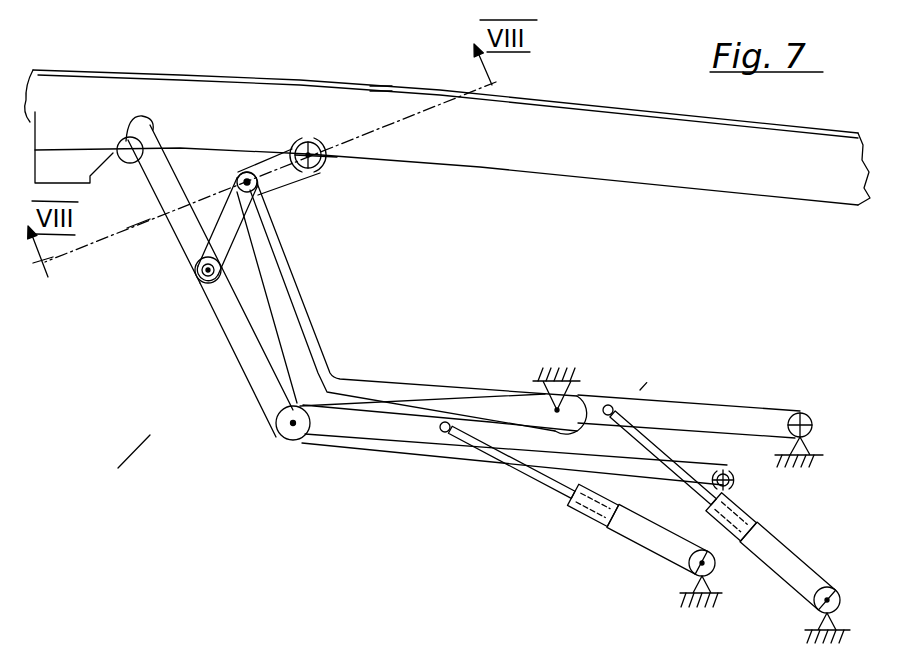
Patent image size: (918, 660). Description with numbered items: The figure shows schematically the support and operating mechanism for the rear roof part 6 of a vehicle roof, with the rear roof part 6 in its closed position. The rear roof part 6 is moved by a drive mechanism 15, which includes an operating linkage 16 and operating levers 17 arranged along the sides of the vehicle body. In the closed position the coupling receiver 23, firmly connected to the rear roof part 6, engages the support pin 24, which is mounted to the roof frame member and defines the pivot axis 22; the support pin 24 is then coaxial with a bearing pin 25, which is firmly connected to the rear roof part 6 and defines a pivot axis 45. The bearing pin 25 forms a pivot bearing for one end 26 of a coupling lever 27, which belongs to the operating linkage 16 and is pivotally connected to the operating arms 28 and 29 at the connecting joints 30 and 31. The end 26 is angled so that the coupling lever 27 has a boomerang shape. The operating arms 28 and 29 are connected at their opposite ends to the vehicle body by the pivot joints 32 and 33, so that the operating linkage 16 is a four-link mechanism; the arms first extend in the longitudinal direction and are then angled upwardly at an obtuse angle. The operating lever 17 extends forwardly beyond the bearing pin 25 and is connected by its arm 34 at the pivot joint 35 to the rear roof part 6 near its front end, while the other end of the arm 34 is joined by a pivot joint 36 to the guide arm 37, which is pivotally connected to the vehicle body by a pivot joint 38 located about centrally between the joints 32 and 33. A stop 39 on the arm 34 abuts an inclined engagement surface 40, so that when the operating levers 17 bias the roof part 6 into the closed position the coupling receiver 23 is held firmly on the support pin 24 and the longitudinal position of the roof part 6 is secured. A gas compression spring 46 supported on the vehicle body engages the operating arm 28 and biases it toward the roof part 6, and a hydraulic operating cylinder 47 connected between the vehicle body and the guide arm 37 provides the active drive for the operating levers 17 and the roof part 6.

The rear roof part 6 is at (735, 171).
The drive mechanism 15 is at (155, 430).
The operating linkage 16 is at (642, 388).
The operating lever 17 is at (250, 400).
The pivot axis 22 is at (305, 141).
The coupling receiver 23 is at (304, 180).
The support pin 24 is at (380, 86).
The bearing pin 25 is at (409, 61).
The end of coupling lever 26 is at (300, 178).
The coupling lever 27 is at (216, 178).
The operating arm 28 is at (662, 413).
The operating arm 29 is at (622, 460).
The connecting joint 30 is at (245, 171).
The connecting joint 31 is at (207, 286).
The pivot joint 32 is at (802, 410).
The pivot joint 33 is at (735, 483).
The arm 34 is at (180, 240).
The pivot joint 35 is at (120, 217).
The pivot joint 36 is at (291, 442).
The guide arm 37 is at (333, 433).
The pivot joint 38 is at (585, 393).
The stop 39 is at (117, 137).
The engagement surface 40 is at (88, 175).
The pivot axis 45 is at (325, 129).
The gas compression spring 46 is at (800, 532).
The hydraulic operating cylinder 47 is at (626, 556).